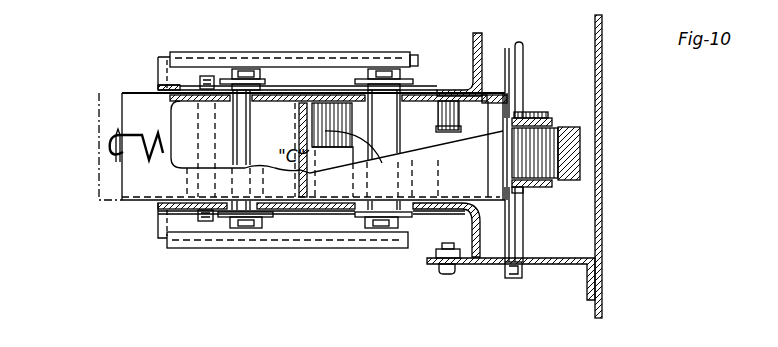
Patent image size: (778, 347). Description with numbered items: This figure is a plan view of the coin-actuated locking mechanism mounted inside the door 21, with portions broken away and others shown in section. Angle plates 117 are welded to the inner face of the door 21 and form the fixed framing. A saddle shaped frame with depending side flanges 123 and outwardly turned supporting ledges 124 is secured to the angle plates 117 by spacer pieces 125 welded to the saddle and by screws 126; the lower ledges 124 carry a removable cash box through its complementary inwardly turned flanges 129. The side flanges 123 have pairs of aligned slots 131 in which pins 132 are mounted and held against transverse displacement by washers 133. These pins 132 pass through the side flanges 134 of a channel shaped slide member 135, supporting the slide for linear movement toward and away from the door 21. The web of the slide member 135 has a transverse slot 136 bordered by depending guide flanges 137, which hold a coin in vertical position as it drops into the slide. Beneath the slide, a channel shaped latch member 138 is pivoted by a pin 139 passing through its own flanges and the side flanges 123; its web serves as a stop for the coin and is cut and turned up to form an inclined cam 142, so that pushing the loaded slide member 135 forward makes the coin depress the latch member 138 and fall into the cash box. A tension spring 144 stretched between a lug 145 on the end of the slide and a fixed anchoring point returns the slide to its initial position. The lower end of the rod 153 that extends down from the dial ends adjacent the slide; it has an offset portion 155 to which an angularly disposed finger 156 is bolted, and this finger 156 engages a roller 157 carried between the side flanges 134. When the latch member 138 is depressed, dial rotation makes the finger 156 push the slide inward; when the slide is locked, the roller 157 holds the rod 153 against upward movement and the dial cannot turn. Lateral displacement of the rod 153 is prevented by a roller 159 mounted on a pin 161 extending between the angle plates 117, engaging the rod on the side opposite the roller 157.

The door 21 is at (603, 214).
The angle plates 117 is at (557, 264).
The side flanges 123 is at (157, 87).
The supporting ledges 124 is at (157, 72).
The spacer pieces 125 is at (483, 244).
The screws 126 is at (447, 275).
The inwardly turned flanges 129 is at (285, 233).
The aligned slots 131 is at (183, 90).
The pins 132 is at (243, 69).
The washers 133 is at (270, 82).
The side flanges 134 is at (436, 95).
The slide member 135 is at (122, 95).
The transverse slot 136 is at (306, 192).
The guide flanges 137 is at (306, 128).
The latch member 138 is at (188, 122).
The pin 139 is at (200, 213).
The inclined cam 142 is at (373, 157).
The tension spring 144 is at (123, 173).
The lug 145 is at (108, 156).
The rod 153 is at (580, 150).
The offset portion 155 is at (550, 126).
The finger 156 is at (557, 174).
The roller 157 is at (508, 104).
The roller 159 is at (540, 113).
The pin 161 is at (523, 62).